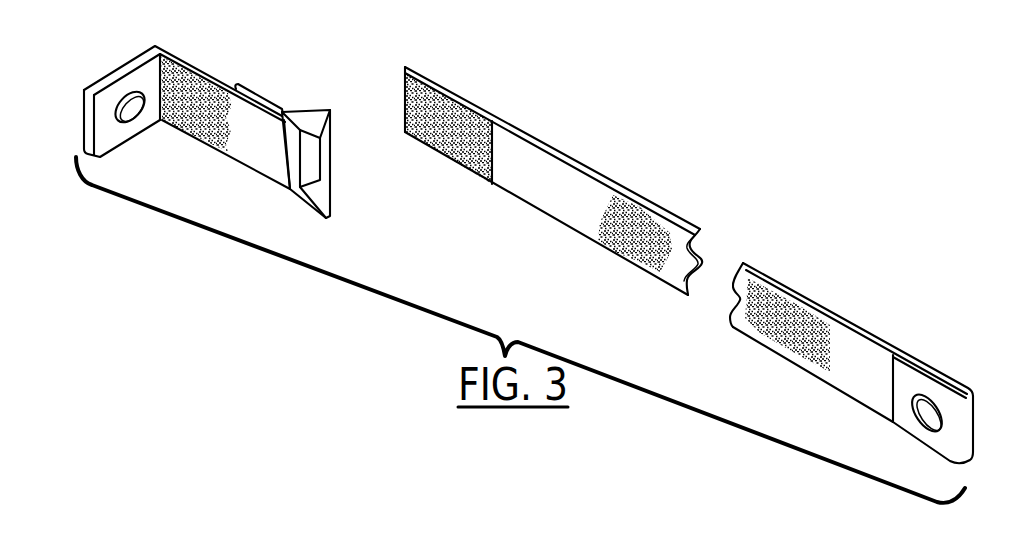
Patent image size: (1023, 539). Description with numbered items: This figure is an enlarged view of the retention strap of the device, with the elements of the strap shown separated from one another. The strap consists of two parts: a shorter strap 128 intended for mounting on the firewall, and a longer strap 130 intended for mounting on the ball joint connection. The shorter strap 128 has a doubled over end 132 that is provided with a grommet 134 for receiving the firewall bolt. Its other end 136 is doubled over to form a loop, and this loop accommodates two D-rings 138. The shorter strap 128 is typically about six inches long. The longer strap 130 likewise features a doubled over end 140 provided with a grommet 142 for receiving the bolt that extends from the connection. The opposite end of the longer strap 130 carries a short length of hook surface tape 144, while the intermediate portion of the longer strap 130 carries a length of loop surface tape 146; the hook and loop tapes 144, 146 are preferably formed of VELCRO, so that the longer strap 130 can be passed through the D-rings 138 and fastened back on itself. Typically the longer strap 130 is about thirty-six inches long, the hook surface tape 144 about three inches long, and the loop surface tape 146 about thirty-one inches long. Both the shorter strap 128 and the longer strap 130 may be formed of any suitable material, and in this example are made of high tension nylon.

The shorter strap 128 is at (210, 88).
The longer strap 130 is at (678, 233).
The doubled over end 132 is at (105, 98).
The grommet 134 is at (135, 108).
The other end 136 is at (288, 173).
The D-rings 138 is at (333, 140).
The doubled over end 140 is at (900, 372).
The grommet 142 is at (932, 408).
The hook surface tape 144 is at (462, 110).
The loop surface tape 146 is at (577, 177).